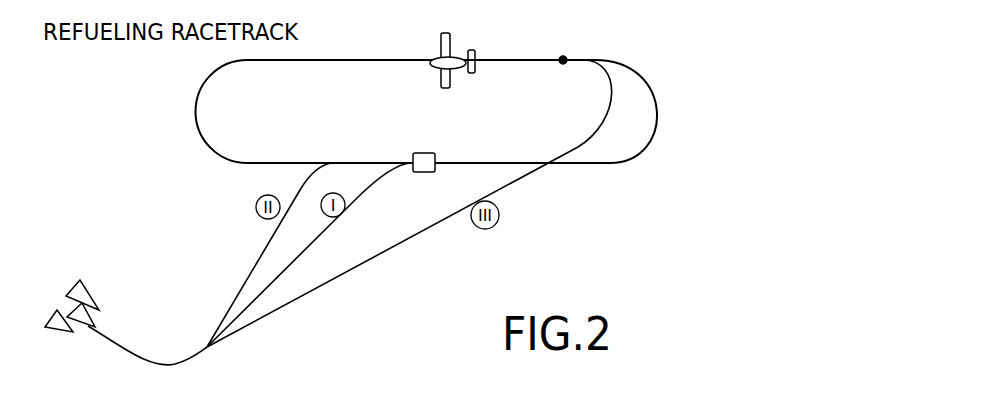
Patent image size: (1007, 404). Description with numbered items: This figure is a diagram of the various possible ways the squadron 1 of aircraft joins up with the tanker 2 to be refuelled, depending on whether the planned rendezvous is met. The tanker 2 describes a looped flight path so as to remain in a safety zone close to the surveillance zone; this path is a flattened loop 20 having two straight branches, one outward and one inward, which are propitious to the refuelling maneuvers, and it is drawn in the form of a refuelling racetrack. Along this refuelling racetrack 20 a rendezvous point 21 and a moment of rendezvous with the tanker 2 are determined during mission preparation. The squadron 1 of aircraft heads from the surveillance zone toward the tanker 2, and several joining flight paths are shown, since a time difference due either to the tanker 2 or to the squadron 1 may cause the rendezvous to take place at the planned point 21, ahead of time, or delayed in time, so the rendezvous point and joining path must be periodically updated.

The squadron of aircraft 1 is at (80, 318).
The tanker 2 is at (457, 53).
The flattened loop (refuelling racetrack) 20 is at (657, 84).
The rendezvous point 21 is at (430, 156).